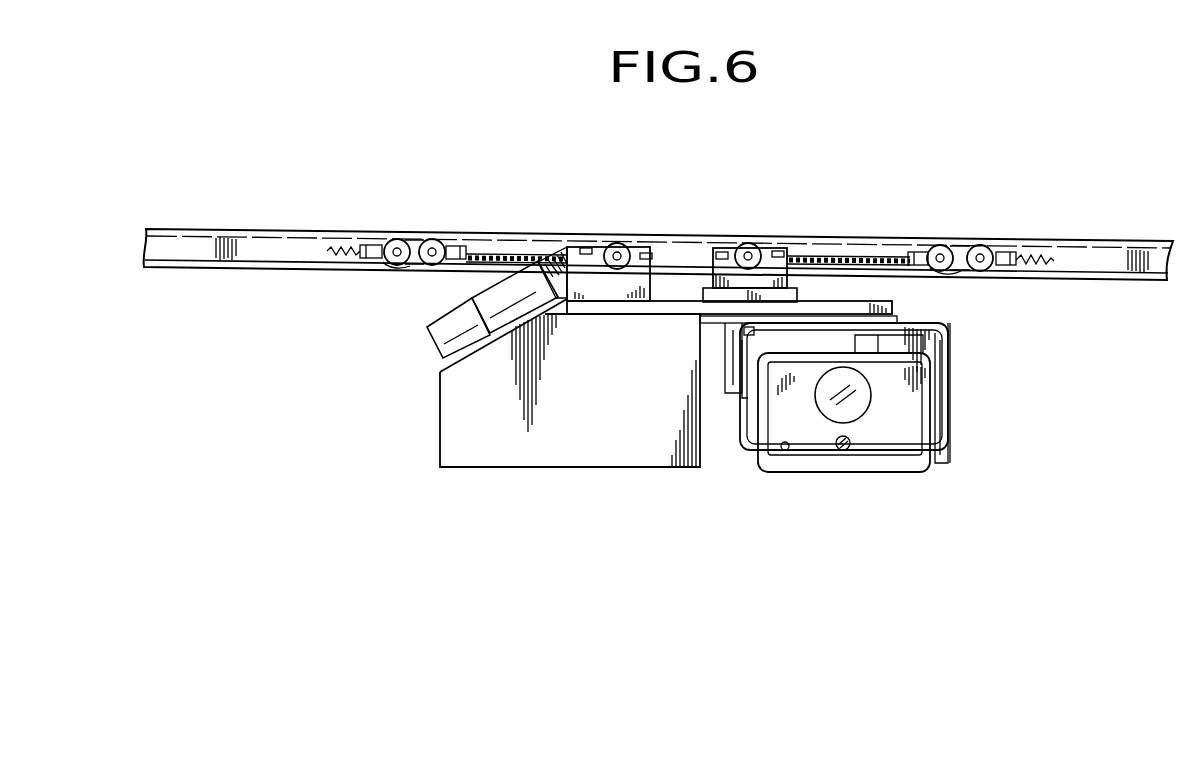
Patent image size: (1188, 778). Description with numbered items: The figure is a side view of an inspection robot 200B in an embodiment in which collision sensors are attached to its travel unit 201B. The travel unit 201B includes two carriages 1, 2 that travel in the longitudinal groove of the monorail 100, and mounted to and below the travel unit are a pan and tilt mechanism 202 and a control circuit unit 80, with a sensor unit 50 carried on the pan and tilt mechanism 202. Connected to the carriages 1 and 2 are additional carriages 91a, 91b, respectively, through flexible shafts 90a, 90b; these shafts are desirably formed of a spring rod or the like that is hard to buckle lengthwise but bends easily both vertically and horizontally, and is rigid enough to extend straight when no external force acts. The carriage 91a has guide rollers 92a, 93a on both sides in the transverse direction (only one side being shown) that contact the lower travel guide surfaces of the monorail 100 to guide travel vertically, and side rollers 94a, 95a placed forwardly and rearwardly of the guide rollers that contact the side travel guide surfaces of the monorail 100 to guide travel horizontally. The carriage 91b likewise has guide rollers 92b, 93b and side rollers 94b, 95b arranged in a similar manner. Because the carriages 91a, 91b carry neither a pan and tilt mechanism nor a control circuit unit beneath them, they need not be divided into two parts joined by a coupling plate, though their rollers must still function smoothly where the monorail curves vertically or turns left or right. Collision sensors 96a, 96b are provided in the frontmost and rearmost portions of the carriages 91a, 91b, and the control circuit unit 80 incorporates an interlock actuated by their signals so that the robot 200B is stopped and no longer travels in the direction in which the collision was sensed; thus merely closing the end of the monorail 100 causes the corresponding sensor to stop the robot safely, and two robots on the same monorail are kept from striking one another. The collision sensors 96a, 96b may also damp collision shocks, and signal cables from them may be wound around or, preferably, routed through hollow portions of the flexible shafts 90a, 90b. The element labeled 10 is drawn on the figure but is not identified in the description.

The monorail 100 is at (204, 229).
The collision sensor 96a is at (326, 250).
The side roller 94a is at (360, 262).
The guide roller 92a is at (390, 242).
The guide roller 93a is at (430, 241).
The carriage 91a is at (407, 266).
The side roller 95a is at (456, 262).
The flexible shaft 90a is at (496, 253).
The carriage 1 is at (578, 268).
The carriage 2 is at (733, 270).
The travel unit 201B is at (825, 284).
The flexible shaft 90b is at (840, 254).
The side roller 94b is at (915, 252).
The guide roller 92b is at (940, 246).
The guide roller 93b is at (982, 246).
The carriage 91b is at (960, 270).
The side roller 95b is at (1012, 256).
The collision sensor 96b is at (1046, 262).
The sensor unit 10 is at (442, 351).
The control circuit unit 80 is at (528, 457).
The robot 200B is at (992, 368).
The pan and tilt mechanism 202 is at (968, 442).
The sensor unit 50 is at (913, 450).